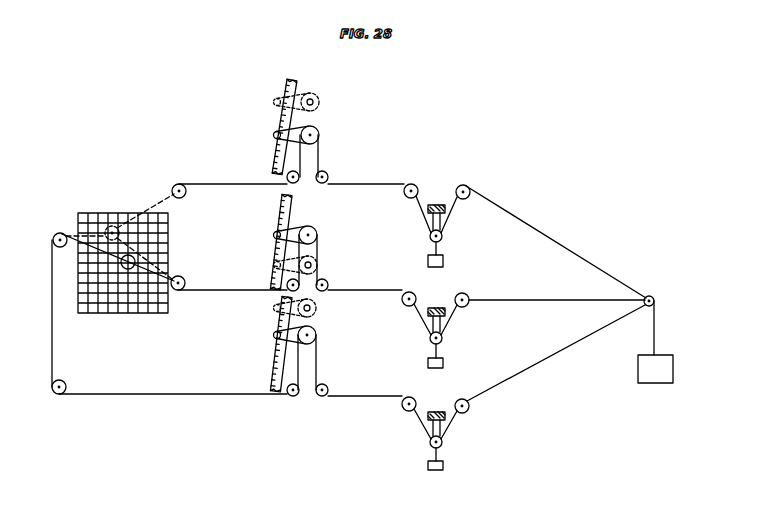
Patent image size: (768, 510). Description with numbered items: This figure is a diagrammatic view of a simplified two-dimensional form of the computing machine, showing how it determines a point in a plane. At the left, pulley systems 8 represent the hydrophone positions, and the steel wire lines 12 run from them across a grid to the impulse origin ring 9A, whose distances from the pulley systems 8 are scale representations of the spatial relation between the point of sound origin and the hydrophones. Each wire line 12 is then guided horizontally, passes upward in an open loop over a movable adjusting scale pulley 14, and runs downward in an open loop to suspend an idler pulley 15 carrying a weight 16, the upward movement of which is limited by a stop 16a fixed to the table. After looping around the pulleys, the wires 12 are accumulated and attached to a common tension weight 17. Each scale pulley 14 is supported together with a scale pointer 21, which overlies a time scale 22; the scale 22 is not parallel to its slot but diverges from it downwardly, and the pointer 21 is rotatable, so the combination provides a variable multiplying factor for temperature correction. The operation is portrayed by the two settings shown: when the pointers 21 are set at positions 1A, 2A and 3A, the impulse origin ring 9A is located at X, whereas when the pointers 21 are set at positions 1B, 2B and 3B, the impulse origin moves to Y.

The pulley system 8 is at (53, 241).
The impulse origin ring 9A is at (136, 261).
The position of impulse origin X is at (117, 279).
The position of impulse origin Y is at (133, 236).
The time scale 22 is at (287, 82).
The scale pointer 21 is at (277, 139).
The adjusting scale pulley 14 is at (313, 135).
The pointer position 1A is at (259, 134).
The pointer position 1B is at (259, 101).
The pointer position 2A is at (257, 237).
The pointer position 2B is at (257, 265).
The pointer position 3A is at (257, 335).
The pointer position 3B is at (257, 308).
The stop 16a is at (437, 206).
The idler pulley 15 is at (443, 236).
The weight 16 is at (443, 262).
The steel wire line 12 is at (578, 333).
The common tension weight 17 is at (662, 362).